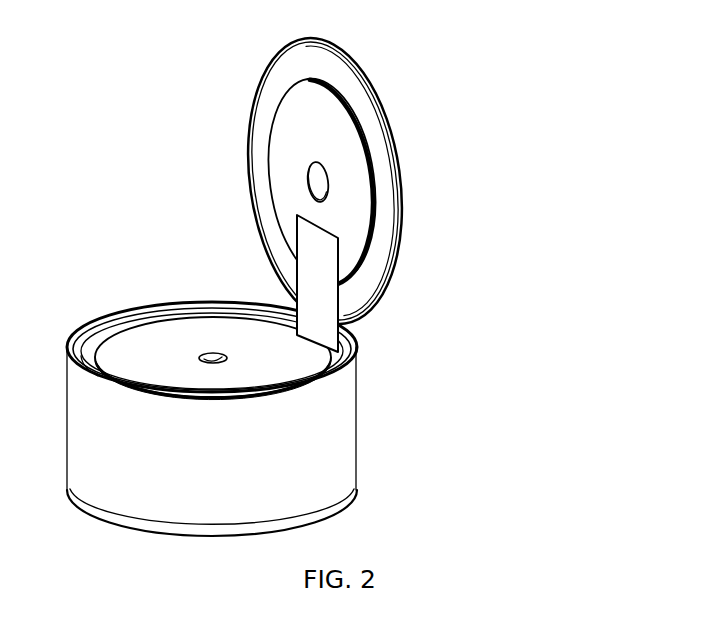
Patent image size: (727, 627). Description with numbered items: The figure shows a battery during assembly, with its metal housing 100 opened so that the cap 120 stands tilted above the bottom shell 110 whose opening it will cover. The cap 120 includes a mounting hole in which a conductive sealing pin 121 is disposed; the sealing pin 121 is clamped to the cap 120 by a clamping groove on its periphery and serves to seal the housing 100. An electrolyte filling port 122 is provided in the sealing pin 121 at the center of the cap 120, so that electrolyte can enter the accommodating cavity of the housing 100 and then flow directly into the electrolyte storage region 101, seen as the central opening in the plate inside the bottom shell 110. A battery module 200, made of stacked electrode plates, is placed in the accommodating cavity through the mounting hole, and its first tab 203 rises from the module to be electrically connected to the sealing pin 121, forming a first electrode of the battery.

The housing 100 is at (334, 282).
The bottom shell 110 is at (358, 358).
The cap 120 is at (344, 181).
The sealing pin 121 is at (348, 203).
The electrolyte filling port 122 is at (309, 179).
The battery module 200 is at (213, 325).
The electrolyte storage region 101 is at (212, 356).
The first tab 203 is at (313, 269).